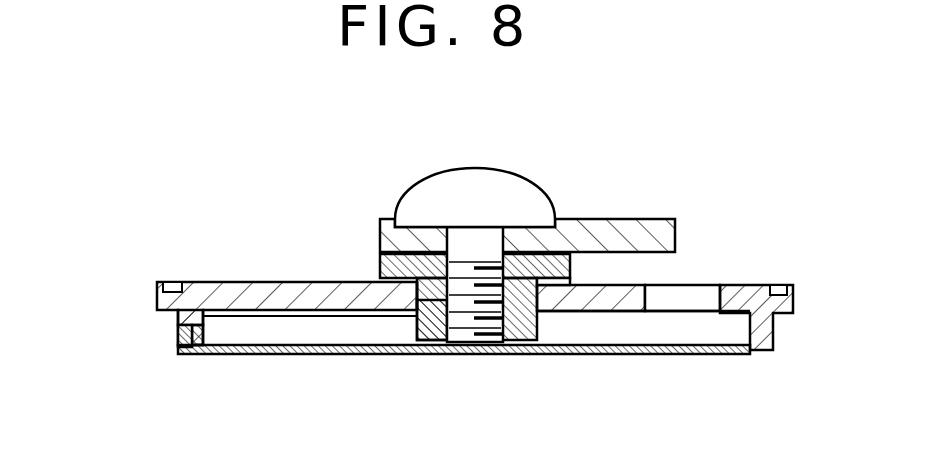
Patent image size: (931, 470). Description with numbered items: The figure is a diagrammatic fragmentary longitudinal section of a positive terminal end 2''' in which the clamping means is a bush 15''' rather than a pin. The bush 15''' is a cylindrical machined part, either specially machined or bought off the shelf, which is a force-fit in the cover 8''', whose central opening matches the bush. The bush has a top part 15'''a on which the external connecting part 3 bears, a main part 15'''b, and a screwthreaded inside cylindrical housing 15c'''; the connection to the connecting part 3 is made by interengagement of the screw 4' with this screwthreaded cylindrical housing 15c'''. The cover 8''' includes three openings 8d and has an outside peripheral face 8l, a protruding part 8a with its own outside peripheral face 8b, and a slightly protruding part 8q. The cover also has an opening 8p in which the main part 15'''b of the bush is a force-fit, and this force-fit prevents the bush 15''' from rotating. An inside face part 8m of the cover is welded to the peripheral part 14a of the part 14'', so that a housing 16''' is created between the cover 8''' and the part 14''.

The positive terminal end 2''' is at (459, 281).
The connecting part 3 is at (598, 212).
The screw 4' is at (468, 261).
The cover 8''' is at (225, 303).
The outside peripheral face 8l is at (157, 300).
The slightly protruding part 8q is at (412, 277).
The outside peripheral face 8b is at (178, 320).
The protruding part 8a is at (178, 338).
The openings 8d is at (650, 297).
The opening 8p is at (548, 285).
The inside face part 8m is at (775, 348).
The part 14'' is at (477, 395).
The peripheral part 14a is at (196, 352).
The bush 15''' is at (451, 323).
The top part 15'''a is at (423, 230).
The main part 15'''b is at (367, 362).
The screwthreaded inside cylindrical housing 15c''' is at (442, 346).
The housing 16''' is at (660, 361).